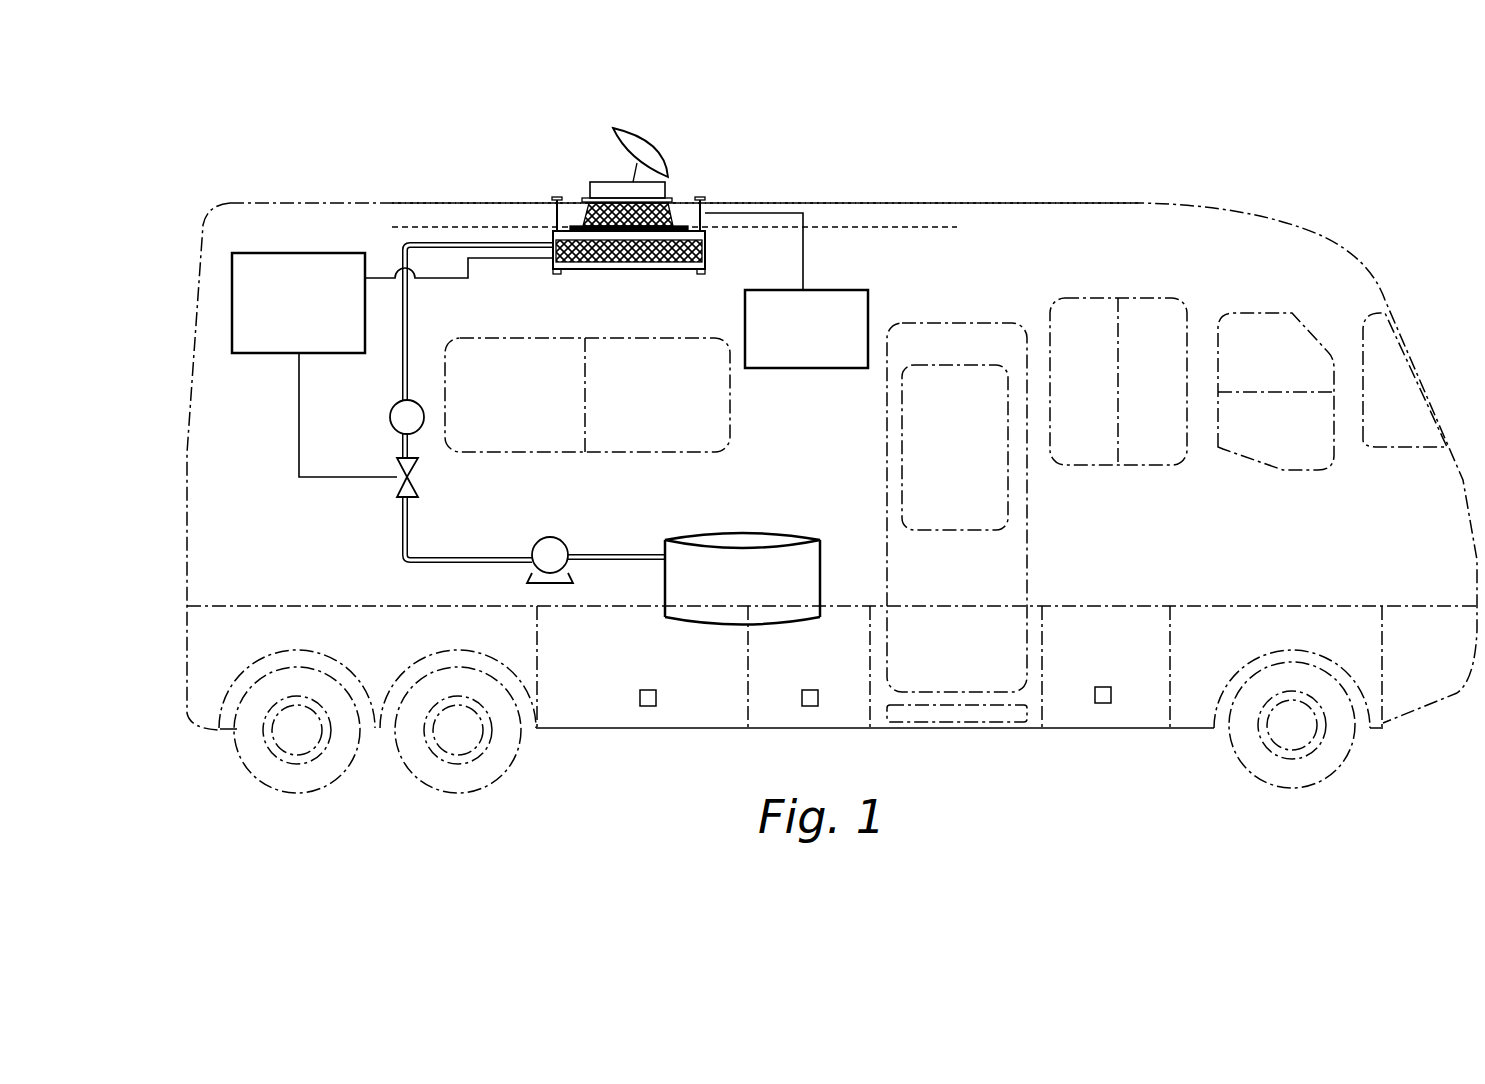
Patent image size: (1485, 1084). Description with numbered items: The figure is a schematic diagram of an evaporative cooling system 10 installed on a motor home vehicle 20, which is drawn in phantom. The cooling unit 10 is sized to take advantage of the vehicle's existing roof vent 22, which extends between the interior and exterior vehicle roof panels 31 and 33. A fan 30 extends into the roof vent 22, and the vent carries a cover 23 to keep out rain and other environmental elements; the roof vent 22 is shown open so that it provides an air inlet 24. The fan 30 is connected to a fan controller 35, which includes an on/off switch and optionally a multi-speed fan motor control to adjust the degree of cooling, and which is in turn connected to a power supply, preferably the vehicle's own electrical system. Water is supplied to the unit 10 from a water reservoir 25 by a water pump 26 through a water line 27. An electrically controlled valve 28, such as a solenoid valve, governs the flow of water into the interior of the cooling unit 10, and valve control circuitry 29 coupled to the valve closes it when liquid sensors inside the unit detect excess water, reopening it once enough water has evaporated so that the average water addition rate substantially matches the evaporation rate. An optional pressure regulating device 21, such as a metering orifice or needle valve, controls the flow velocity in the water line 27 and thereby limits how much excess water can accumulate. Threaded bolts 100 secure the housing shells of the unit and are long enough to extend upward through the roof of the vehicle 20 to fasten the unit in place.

The evaporative cooling system 10 is at (618, 198).
The motor home vehicle 20 is at (1005, 202).
The pressure regulating device 21 is at (390, 412).
The roof vent 22 is at (665, 192).
The cover 23 is at (643, 147).
The air inlet 24 is at (647, 130).
The water reservoir 25 is at (745, 530).
The water pump 26 is at (545, 537).
The water line 27 is at (403, 345).
The electrically controlled valve 28 is at (397, 487).
The valve control circuitry 29 is at (272, 355).
The fan 30 is at (583, 223).
The interior vehicle roof panel 31 is at (812, 202).
The exterior vehicle roof panel 33 is at (923, 227).
The fan controller 35 is at (815, 368).
The threaded rods or bolts 100 is at (555, 200).